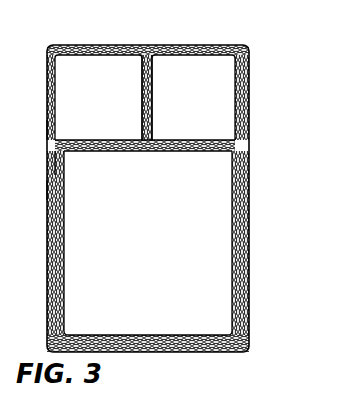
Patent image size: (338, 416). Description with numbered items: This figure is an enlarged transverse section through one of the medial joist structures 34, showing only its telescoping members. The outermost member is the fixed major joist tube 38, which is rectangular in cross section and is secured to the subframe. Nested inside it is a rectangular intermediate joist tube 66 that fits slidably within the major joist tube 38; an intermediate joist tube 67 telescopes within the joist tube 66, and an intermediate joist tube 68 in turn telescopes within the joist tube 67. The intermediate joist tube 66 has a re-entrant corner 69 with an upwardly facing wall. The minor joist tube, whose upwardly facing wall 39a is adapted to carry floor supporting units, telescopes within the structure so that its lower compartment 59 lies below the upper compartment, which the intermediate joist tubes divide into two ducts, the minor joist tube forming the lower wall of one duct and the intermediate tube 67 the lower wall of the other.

The medial joist structure 34 is at (257, 168).
The major joist tube 38 is at (113, 31).
The upwardly facing wall of minor joist tube 39a is at (189, 145).
The re-entrant corner 69 is at (152, 103).
The lower compartment 59 is at (65, 239).
The intermediate joist tube 66 is at (48, 131).
The intermediate joist tube 67 is at (48, 168).
The intermediate joist tube 68 is at (48, 190).